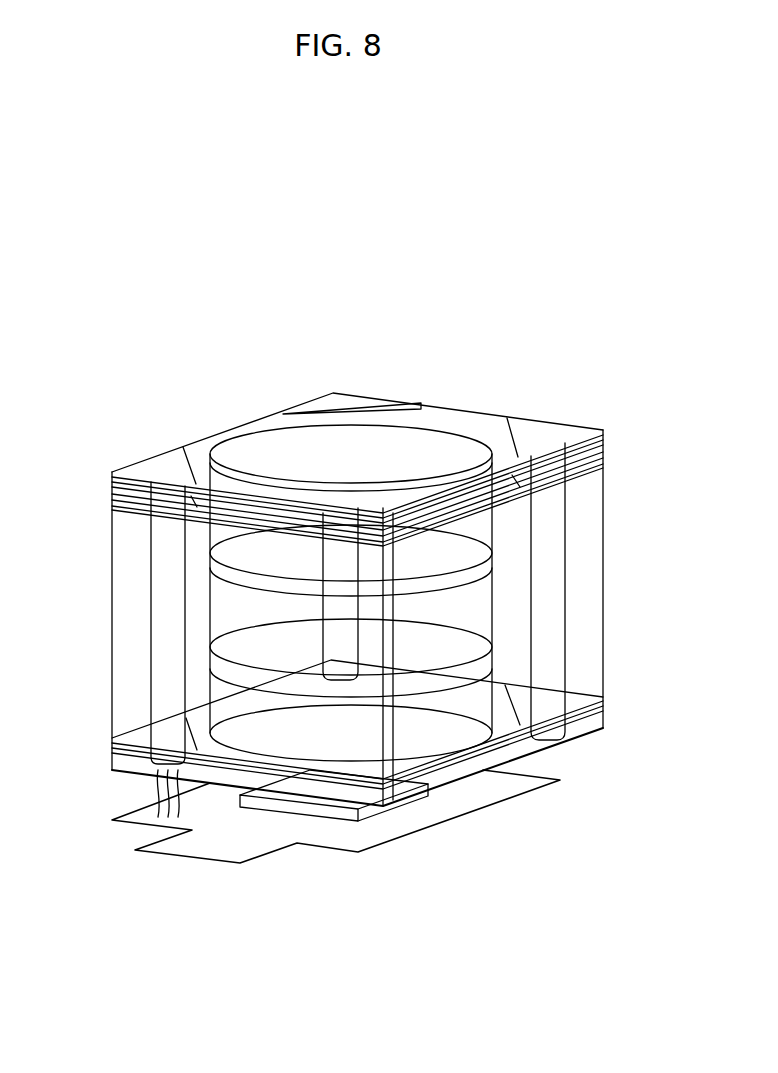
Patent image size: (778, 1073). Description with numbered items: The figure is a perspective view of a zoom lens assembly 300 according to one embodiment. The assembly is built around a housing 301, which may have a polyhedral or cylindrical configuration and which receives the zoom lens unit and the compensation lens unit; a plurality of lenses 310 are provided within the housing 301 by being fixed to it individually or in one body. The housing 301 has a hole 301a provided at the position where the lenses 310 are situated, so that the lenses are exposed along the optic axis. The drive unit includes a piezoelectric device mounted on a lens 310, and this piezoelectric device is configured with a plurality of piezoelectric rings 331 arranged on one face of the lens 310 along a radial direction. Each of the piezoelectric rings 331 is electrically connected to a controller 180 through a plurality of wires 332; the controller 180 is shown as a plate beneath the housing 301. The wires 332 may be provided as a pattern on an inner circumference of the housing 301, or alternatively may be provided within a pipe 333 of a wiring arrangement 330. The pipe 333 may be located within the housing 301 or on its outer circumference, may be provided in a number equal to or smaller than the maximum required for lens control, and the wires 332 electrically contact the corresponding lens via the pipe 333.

The sensor module 300 is at (172, 385).
The housing 301 is at (603, 480).
The hole 301a is at (492, 607).
The lens 310 is at (447, 593).
The piezoelectric ring 331 is at (472, 547).
The terminal assembly 330 is at (106, 649).
The pipe 333 is at (150, 623).
The wires 332 is at (158, 788).
The controller 180 is at (270, 855).